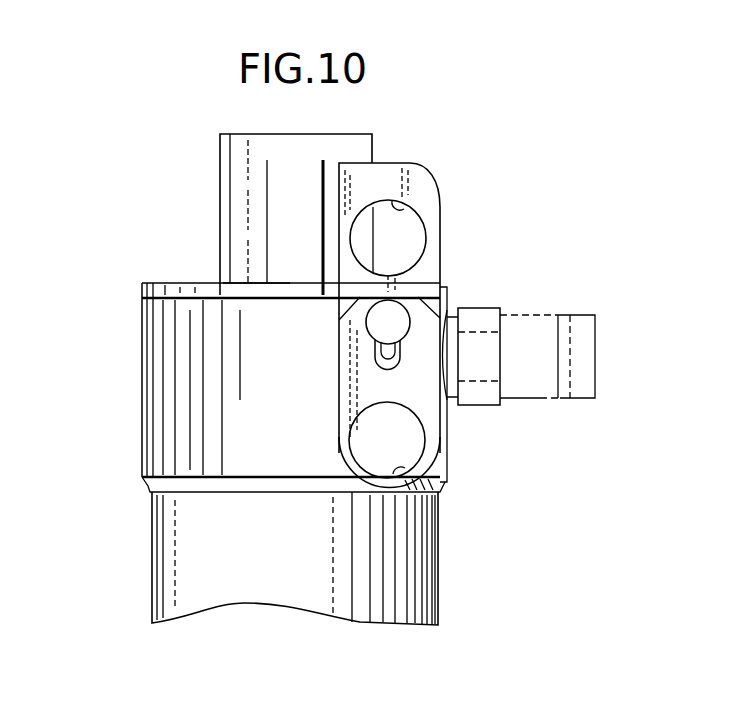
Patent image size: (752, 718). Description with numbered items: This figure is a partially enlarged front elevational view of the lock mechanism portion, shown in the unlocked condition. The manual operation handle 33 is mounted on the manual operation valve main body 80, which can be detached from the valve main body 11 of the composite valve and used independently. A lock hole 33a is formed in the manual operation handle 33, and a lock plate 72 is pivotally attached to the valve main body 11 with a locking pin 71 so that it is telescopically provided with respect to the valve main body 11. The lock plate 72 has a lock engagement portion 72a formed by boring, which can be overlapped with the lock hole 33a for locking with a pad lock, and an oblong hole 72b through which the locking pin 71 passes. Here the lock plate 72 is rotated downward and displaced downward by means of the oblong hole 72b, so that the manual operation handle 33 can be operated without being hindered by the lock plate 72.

The valve main body 11 is at (150, 560).
The manual operation handle 33 is at (232, 183).
The lock hole 33a is at (396, 205).
The locking pin 71 is at (398, 316).
The lock plate 72 is at (425, 412).
The lock engagement portion 72a is at (393, 472).
The oblong hole 72b is at (398, 346).
The manual operation valve main body 80 is at (130, 357).